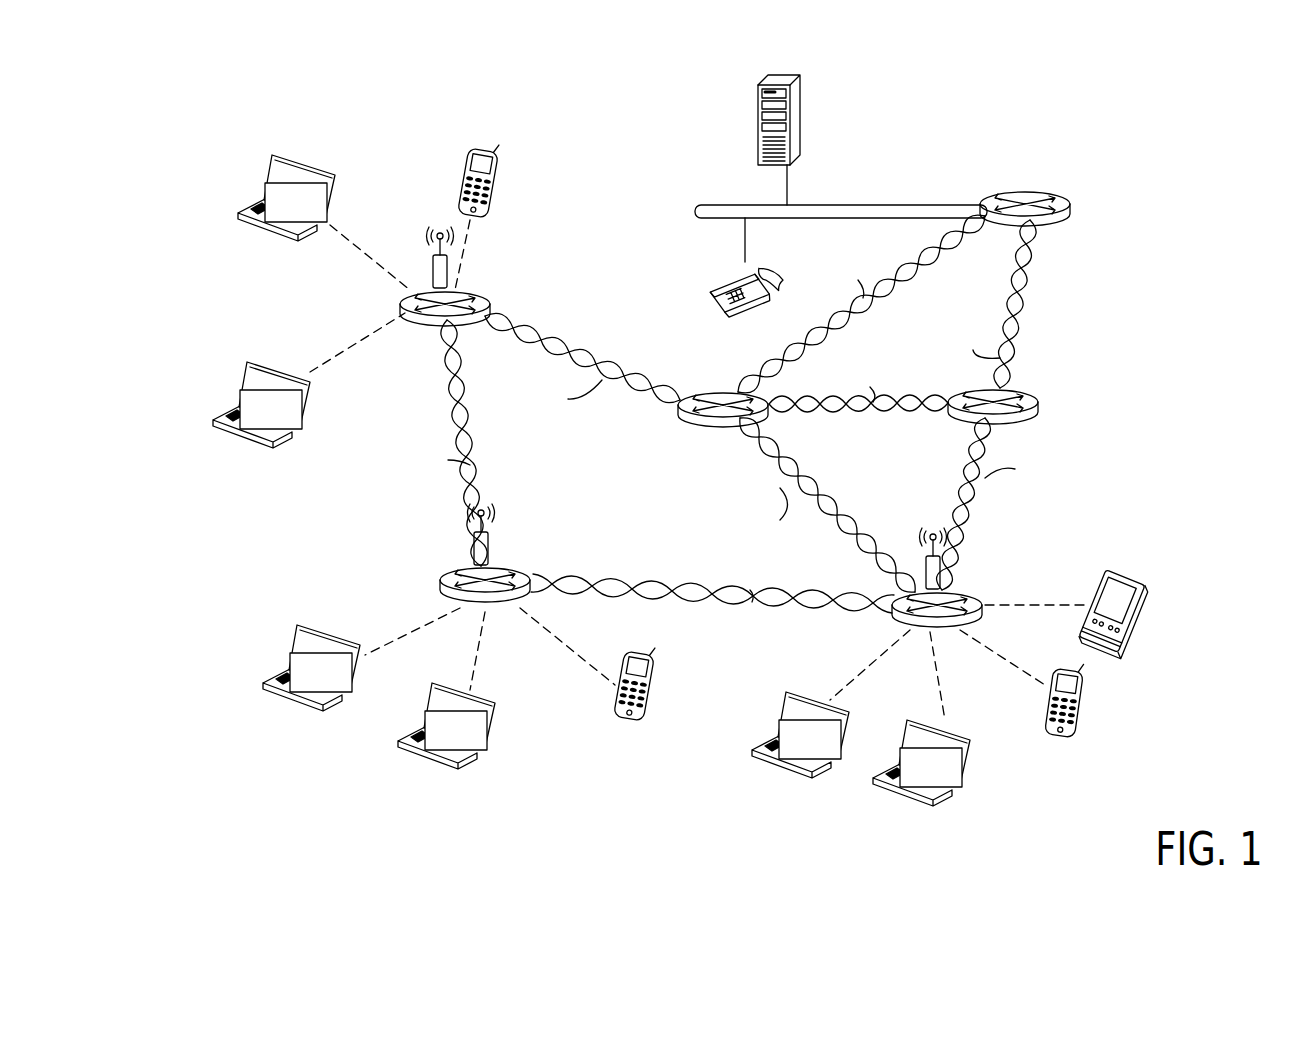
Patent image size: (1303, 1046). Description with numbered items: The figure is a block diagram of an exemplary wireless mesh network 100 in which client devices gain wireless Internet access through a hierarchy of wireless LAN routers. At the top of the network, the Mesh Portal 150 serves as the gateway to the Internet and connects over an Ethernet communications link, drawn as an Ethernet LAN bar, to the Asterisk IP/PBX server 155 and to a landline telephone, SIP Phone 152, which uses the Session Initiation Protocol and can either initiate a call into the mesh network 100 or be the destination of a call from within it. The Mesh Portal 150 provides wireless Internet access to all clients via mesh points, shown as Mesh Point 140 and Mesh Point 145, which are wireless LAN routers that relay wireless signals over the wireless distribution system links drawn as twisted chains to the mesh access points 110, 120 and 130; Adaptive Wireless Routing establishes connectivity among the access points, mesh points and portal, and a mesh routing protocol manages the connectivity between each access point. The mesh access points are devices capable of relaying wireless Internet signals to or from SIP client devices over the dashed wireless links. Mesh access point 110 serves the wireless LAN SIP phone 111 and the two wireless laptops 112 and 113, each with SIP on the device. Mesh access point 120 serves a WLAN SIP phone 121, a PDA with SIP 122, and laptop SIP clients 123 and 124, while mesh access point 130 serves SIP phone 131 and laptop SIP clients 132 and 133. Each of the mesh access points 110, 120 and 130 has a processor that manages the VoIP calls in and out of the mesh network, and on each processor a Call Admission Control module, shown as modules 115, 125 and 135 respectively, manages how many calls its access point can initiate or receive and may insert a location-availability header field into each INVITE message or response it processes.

The wireless mesh network 100 is at (369, 804).
The mesh access point 110 is at (518, 563).
The SIP phone 111 is at (682, 693).
The wireless laptop 112 is at (523, 768).
The wireless laptop 113 is at (282, 693).
The call admission control module 115 is at (440, 580).
The mesh access point 120 is at (971, 590).
The WLAN SIP phone 121 is at (1075, 736).
The PDA with SIP 122 is at (1143, 603).
The SIP client 123 is at (984, 764).
The SIP client 124 is at (754, 743).
The call admission control module 125 is at (817, 599).
The mesh access point 130 is at (491, 304).
The SIP phone 131 is at (550, 179).
The SIP client 132 is at (232, 220).
The SIP client 133 is at (212, 430).
The call admission control module 135 is at (427, 288).
The mesh point 140 is at (701, 429).
The mesh point 145 is at (1038, 399).
The mesh portal 150 is at (1122, 180).
The SIP phone 152 is at (711, 300).
The Asterisk IP/PBX server 155 is at (805, 123).